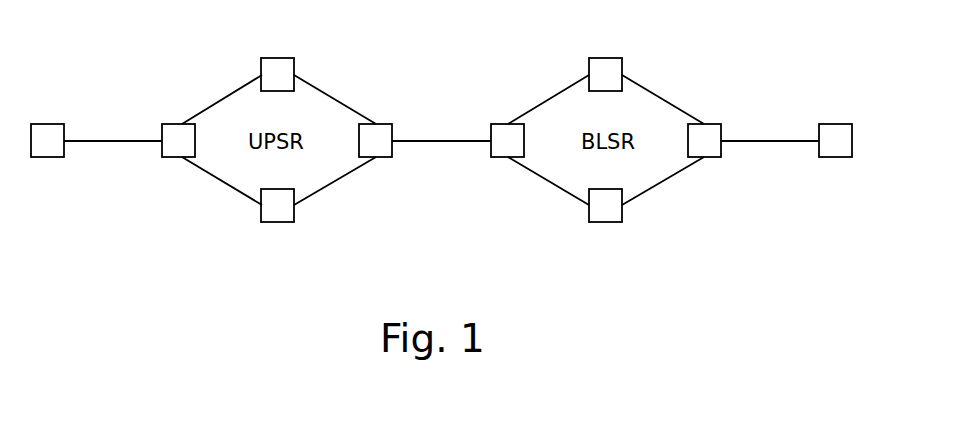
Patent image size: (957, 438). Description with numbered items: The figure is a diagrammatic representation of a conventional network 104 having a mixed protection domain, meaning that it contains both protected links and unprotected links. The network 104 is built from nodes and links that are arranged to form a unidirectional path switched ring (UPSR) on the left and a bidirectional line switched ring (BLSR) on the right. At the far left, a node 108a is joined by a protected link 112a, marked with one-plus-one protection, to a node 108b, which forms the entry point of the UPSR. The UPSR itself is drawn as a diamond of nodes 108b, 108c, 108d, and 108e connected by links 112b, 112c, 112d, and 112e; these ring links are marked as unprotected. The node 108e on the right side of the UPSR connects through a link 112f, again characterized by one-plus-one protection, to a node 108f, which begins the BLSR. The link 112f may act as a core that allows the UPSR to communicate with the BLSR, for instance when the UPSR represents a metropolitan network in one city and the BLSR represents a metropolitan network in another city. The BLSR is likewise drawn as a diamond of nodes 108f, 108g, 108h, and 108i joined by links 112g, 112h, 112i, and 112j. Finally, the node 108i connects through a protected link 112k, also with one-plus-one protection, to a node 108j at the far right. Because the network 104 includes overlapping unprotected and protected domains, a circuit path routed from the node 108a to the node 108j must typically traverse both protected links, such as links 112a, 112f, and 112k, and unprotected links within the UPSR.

The network 104 is at (796, 30).
The node 108a is at (43, 124).
The node 108b is at (170, 158).
The node 108c is at (280, 57).
The node 108d is at (282, 223).
The node 108e is at (382, 123).
The node 108f is at (500, 158).
The node 108g is at (605, 57).
The node 108h is at (605, 223).
The node 108i is at (714, 158).
The node 108j is at (836, 123).
The link 112a is at (137, 142).
The link 112b is at (245, 85).
The link 112c is at (316, 84).
The link 112d is at (237, 193).
The link 112e is at (305, 200).
The link 112f is at (458, 142).
The link 112g is at (556, 95).
The link 112h is at (660, 96).
The link 112i is at (570, 193).
The link 112j is at (650, 193).
The link 112k is at (790, 142).